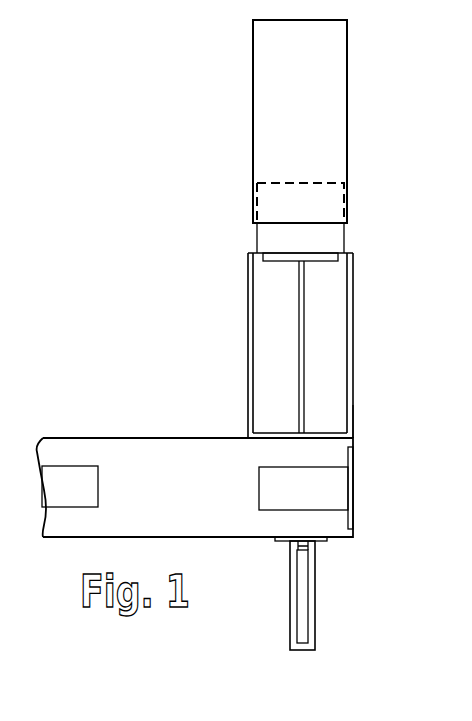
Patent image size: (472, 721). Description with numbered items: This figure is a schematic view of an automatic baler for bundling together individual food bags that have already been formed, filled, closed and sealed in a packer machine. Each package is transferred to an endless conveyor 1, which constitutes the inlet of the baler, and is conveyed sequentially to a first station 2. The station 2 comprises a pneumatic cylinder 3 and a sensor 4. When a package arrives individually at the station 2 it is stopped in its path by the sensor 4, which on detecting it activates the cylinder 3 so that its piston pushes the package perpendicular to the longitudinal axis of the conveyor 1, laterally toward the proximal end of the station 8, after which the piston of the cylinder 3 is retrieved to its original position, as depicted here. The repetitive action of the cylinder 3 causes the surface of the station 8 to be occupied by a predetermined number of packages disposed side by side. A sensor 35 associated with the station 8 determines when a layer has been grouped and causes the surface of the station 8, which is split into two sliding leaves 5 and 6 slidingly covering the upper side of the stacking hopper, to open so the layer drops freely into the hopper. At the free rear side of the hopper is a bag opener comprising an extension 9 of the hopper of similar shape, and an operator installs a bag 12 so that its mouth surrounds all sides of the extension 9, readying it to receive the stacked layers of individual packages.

The endless conveyor 1 is at (165, 445).
The first station 2 is at (315, 545).
The pneumatic cylinder 3 is at (304, 618).
The sensor 4 is at (353, 462).
The sliding leaf 5 is at (270, 326).
The sliding leaf 6 is at (337, 319).
The station 8 is at (354, 410).
The extension 9 is at (344, 233).
The bag 12 is at (347, 57).
The sensor 35 is at (288, 256).